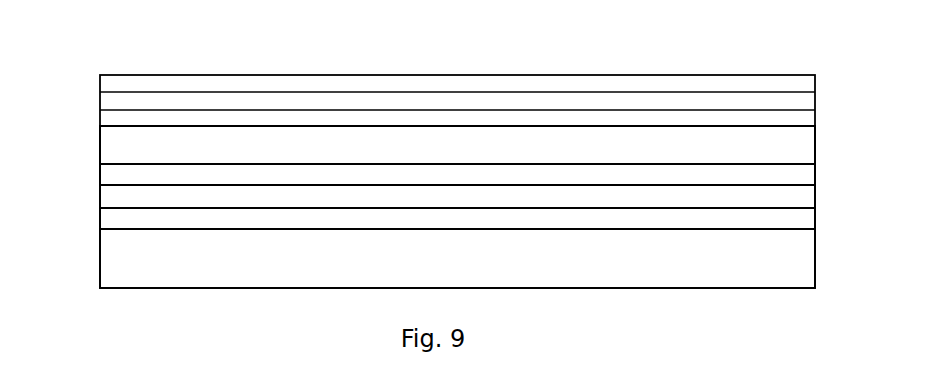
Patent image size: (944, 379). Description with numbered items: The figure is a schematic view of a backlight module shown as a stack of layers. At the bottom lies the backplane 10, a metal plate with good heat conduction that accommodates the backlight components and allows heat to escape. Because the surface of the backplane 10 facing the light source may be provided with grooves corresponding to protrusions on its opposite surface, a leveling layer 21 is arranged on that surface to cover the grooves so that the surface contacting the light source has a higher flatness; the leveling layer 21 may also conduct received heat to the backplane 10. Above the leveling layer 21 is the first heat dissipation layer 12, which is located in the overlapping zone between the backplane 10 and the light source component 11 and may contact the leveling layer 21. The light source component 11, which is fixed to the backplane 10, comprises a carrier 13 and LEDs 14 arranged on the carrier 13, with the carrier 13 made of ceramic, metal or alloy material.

The backplane 10 is at (128, 275).
The leveling layer 21 is at (130, 221).
The first heat dissipation layer 12 is at (128, 200).
The carrier 13 is at (127, 175).
The LEDs 14 is at (127, 150).
The light source component 11 is at (820, 136).